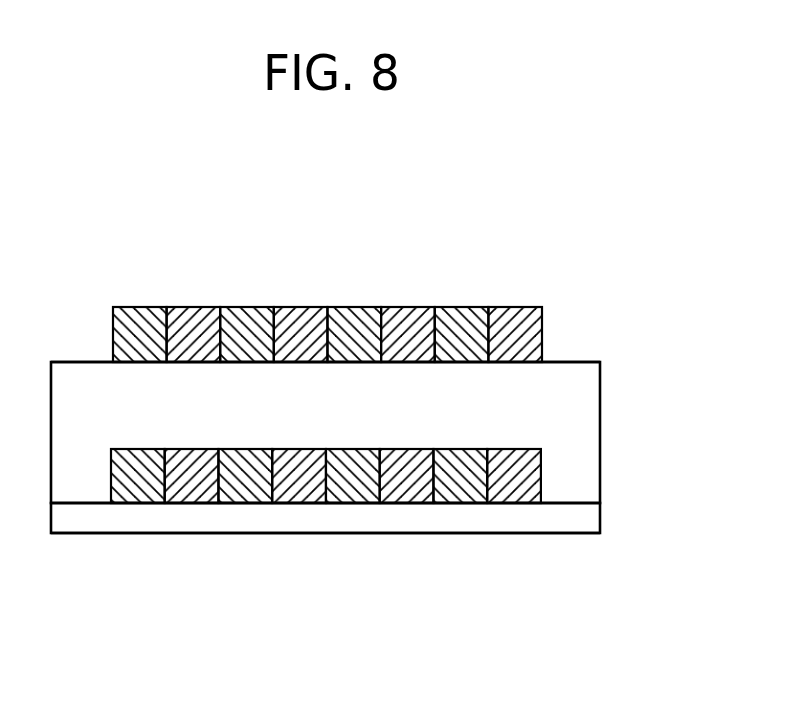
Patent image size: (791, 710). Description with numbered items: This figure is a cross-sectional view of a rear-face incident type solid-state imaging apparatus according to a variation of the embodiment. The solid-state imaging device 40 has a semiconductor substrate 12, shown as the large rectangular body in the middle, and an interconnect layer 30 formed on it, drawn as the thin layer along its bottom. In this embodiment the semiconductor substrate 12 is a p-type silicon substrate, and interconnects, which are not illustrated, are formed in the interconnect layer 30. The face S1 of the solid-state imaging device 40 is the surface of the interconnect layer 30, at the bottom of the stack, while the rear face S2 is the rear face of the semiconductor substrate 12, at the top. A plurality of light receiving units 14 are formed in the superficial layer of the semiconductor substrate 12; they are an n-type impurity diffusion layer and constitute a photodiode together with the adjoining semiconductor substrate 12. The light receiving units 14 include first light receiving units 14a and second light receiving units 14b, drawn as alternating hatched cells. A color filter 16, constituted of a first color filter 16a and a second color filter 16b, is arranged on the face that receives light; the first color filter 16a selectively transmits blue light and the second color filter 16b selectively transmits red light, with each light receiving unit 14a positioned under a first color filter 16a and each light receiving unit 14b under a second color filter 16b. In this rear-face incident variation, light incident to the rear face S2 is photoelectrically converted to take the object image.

The semiconductor substrate 12 is at (613, 362).
The interconnect layer 30 is at (359, 518).
The solid-state imaging device 40 is at (395, 447).
The color filter 16 is at (371, 276).
The first color filter 16a is at (466, 313).
The second color filter 16b is at (498, 236).
The light receiving unit 14 is at (335, 570).
The first light receiving unit 14a is at (455, 492).
The second light receiving unit 14b is at (515, 492).
The face S1 is at (80, 533).
The rear face S2 is at (82, 361).